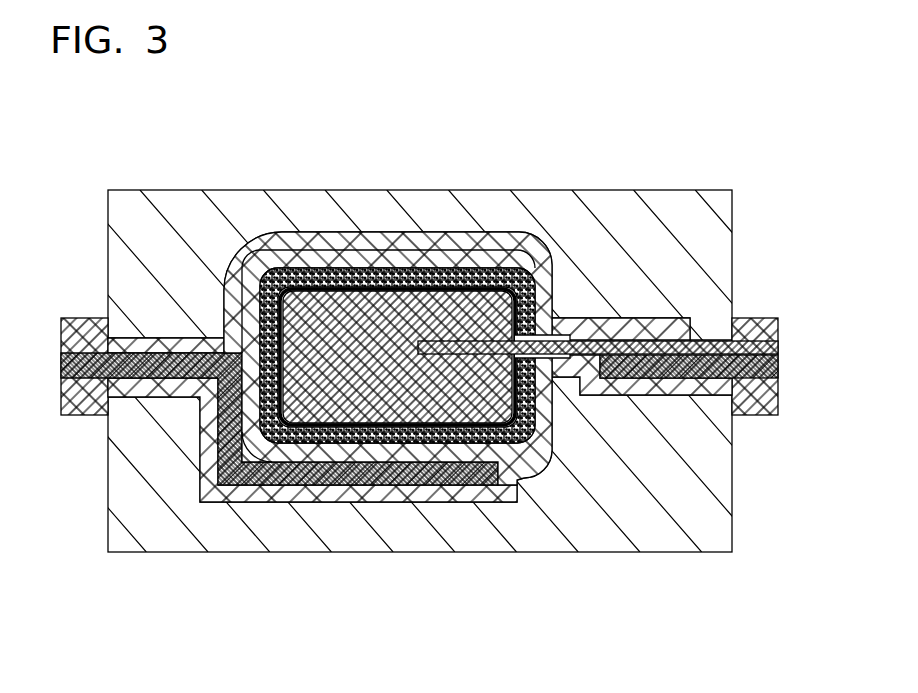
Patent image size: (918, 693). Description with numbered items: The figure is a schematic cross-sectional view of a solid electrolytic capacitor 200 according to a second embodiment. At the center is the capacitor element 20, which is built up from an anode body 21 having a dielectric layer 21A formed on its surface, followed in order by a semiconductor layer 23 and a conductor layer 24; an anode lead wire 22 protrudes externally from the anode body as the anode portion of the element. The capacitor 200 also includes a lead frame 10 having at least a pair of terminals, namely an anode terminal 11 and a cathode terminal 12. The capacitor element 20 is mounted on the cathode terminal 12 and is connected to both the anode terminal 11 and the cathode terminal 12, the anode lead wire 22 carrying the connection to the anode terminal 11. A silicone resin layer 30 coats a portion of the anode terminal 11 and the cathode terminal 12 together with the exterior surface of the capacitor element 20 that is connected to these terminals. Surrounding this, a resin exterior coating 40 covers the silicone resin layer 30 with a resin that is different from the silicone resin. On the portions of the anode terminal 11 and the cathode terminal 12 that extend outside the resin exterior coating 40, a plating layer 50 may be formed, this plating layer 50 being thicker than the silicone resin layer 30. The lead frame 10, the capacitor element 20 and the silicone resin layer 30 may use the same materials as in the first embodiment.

The solid electrolytic capacitor 200 is at (459, 345).
The resin exterior coating 40 is at (707, 217).
The plating layer 50 is at (85, 393).
The lead frame 10 is at (397, 490).
The anode terminal 11 is at (647, 365).
The cathode terminal 12 is at (318, 475).
The silicone resin layer 30 is at (293, 243).
The capacitor element 20 is at (510, 282).
The anode body 21 is at (355, 307).
The dielectric layer 21A is at (386, 288).
The anode lead wire 22 is at (627, 347).
The semiconductor layer 23 is at (418, 278).
The conductor layer 24 is at (472, 258).